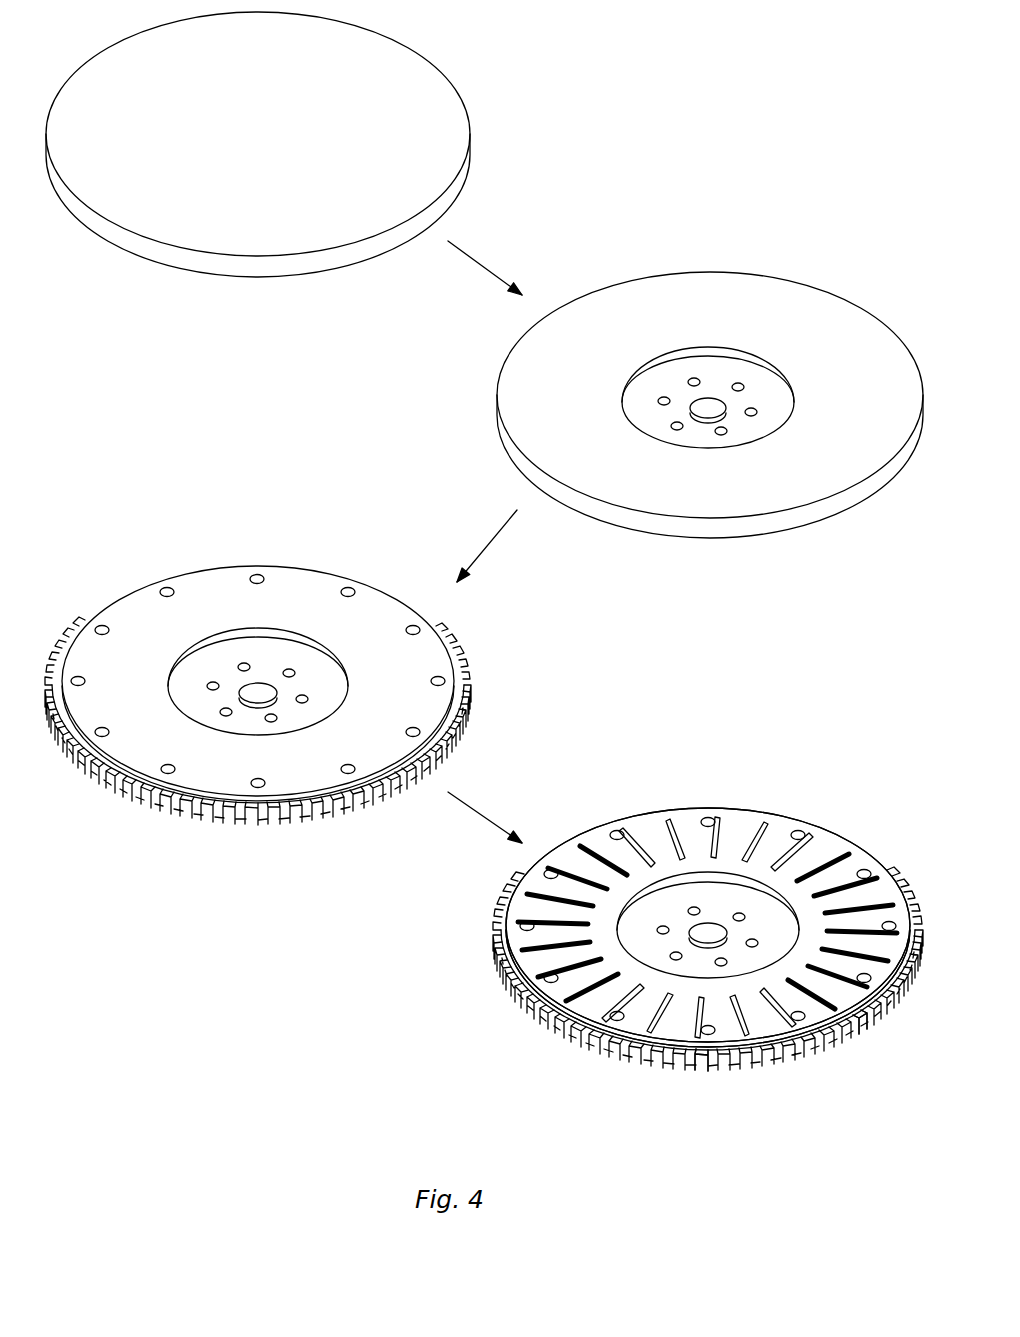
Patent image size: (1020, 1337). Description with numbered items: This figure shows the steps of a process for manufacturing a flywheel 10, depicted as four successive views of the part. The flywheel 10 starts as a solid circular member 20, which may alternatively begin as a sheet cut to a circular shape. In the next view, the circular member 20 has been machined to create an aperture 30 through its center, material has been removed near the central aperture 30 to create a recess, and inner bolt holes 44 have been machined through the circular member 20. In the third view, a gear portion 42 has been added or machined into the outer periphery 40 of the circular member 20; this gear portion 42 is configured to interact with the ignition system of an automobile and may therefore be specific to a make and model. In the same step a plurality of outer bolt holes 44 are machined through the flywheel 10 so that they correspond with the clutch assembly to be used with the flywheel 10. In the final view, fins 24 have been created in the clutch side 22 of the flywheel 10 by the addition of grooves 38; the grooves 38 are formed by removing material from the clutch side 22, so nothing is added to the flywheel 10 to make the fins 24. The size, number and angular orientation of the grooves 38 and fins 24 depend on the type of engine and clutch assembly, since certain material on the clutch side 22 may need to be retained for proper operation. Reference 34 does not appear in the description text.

The flywheel 10 is at (769, 764).
The solid circular member 20 is at (417, 76).
The clutch side 22 is at (843, 318).
The fins 24 is at (790, 820).
The aperture 30 is at (712, 397).
The slots 34 is at (828, 852).
The grooves 38 is at (677, 822).
The outer periphery 40 is at (866, 1017).
The gear portion 42 is at (468, 680).
The bolt holes 44 is at (660, 398).